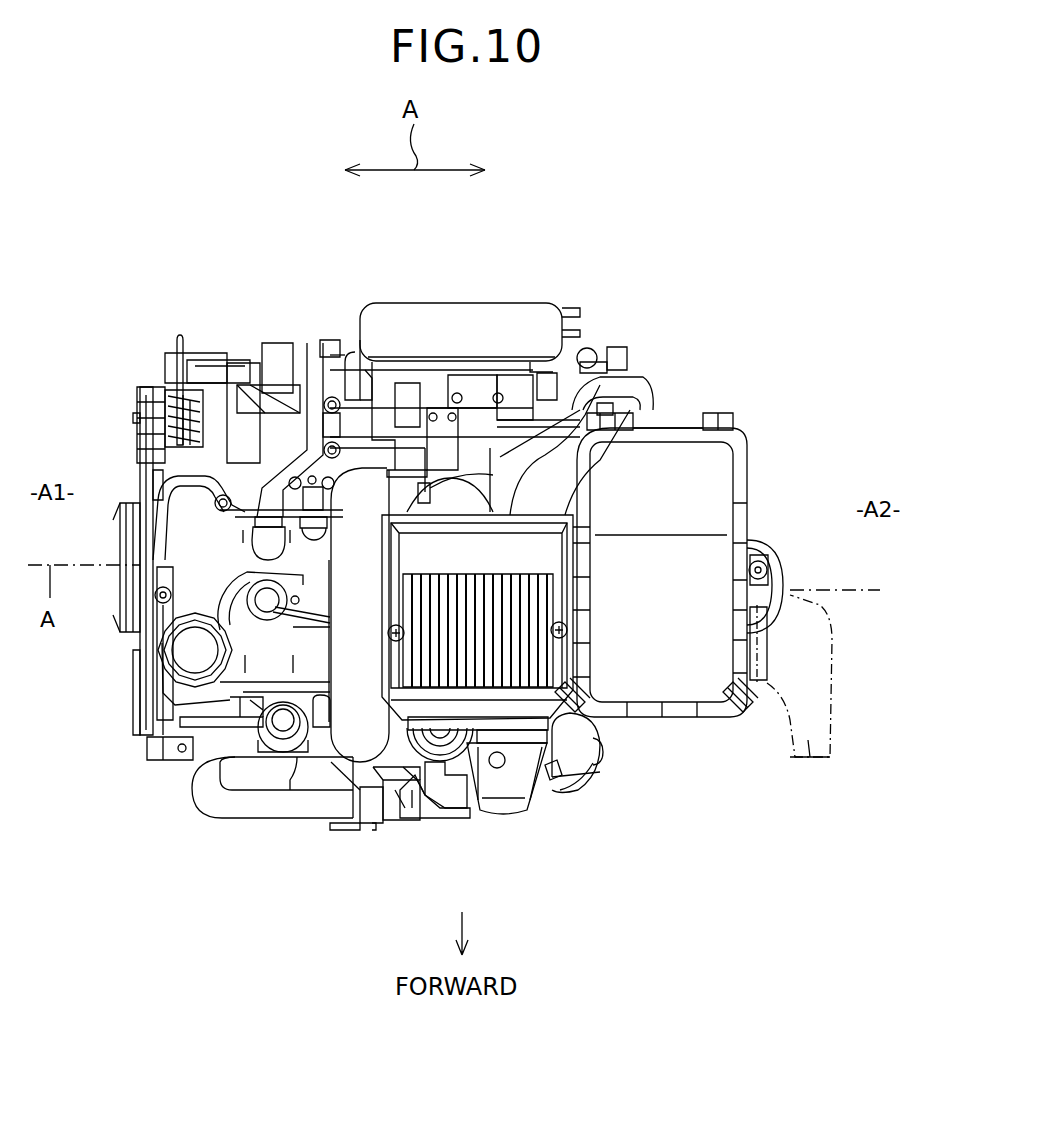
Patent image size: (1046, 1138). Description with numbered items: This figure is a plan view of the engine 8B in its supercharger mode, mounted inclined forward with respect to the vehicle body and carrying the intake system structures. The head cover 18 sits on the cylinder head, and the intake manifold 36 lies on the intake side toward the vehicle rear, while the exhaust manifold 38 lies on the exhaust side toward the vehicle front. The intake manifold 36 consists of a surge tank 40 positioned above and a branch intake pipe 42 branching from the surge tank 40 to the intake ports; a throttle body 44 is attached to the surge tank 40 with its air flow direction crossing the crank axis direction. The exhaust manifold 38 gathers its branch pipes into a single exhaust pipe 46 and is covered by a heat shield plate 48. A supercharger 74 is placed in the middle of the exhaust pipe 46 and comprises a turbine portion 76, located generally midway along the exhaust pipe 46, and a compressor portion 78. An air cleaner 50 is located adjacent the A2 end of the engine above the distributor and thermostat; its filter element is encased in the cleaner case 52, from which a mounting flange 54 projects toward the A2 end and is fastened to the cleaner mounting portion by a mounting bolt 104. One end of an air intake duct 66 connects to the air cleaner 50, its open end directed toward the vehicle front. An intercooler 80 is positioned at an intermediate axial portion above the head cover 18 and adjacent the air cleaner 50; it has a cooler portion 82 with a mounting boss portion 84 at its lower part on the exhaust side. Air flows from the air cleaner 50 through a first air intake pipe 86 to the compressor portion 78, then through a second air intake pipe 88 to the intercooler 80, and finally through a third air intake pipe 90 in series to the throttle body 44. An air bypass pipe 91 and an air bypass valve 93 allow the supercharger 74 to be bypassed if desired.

The engine 8B is at (632, 246).
The head cover 18 is at (205, 551).
The intake manifold 36 is at (355, 374).
The exhaust manifold 38 is at (258, 710).
The surge tank 40 is at (432, 320).
The branch intake pipe 42 is at (330, 367).
The throttle body 44 is at (490, 360).
The exhaust pipe 46 is at (582, 768).
The heat shield plate 48 is at (540, 785).
The air cleaner 50 is at (752, 455).
The cleaner case 52 is at (722, 497).
The mounting flange 54 is at (765, 553).
The air intake duct 66 is at (810, 760).
The supercharger 74 is at (458, 818).
The turbine portion 76 is at (478, 808).
The compressor portion 78 is at (385, 770).
The intercooler 80 is at (541, 508).
The cooler portion 82 is at (545, 658).
The mounting boss portion 84 is at (515, 740).
The first air intake pipe 86 is at (355, 630).
The second air intake pipe 88 is at (415, 768).
The third air intake pipe 90 is at (582, 348).
The air bypass pipe 91 is at (266, 812).
The air bypass valve 93 is at (283, 720).
The mounting bolt 104 is at (766, 568).